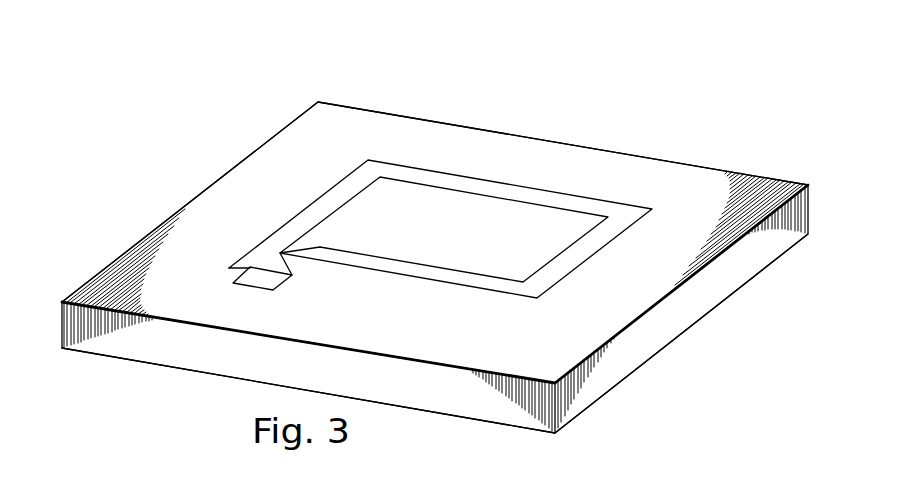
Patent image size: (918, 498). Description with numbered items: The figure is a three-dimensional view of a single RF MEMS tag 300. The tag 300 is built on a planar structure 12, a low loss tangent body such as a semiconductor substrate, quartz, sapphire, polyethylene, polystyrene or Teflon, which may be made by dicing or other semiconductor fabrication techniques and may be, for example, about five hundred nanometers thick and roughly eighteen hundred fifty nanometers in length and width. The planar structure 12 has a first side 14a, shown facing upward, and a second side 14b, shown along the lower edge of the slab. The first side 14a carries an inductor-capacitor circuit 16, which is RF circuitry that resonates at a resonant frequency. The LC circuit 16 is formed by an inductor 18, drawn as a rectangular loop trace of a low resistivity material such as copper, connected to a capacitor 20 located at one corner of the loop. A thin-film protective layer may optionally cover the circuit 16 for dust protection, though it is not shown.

The RF MEMS tag 300 is at (621, 72).
The planar structure 12 is at (435, 267).
The first side 14a is at (658, 170).
The second side 14b is at (681, 335).
The inductor-capacitor circuit 16 is at (440, 200).
The inductor 18 is at (508, 182).
The capacitor 20 is at (276, 289).